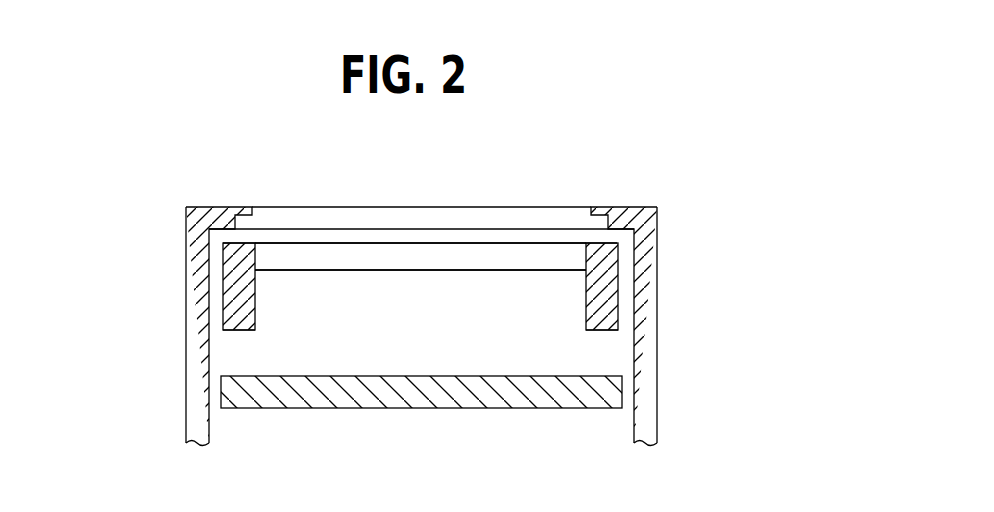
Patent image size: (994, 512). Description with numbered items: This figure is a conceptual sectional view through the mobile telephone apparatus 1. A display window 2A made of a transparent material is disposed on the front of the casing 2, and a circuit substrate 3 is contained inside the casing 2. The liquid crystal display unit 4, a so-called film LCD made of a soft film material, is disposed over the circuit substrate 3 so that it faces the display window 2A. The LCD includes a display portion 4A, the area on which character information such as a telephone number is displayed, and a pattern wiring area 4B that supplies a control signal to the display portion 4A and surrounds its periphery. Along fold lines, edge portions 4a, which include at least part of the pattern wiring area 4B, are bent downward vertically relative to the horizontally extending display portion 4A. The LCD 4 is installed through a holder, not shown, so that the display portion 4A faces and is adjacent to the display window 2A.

The mobile telephone apparatus 1 is at (680, 180).
The casing 2 is at (185, 329).
The display window 2A is at (325, 220).
The circuit substrate 3 is at (322, 403).
The liquid crystal display unit 4 is at (490, 242).
The display portion 4A is at (442, 248).
The pattern wiring area 4B is at (226, 276).
The edge portions 4a is at (253, 328).